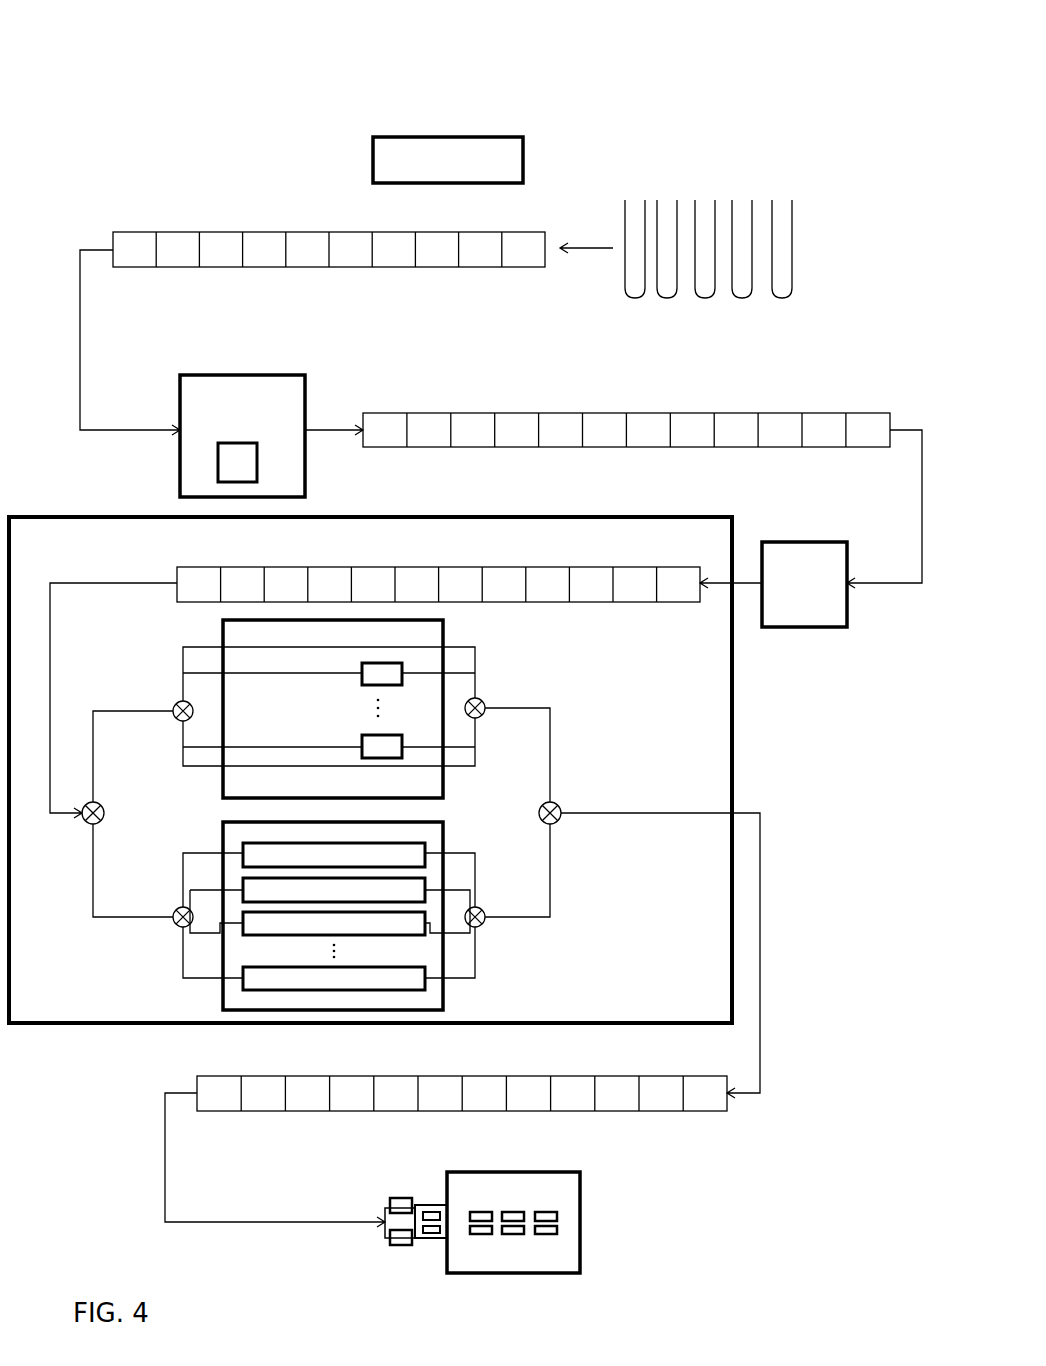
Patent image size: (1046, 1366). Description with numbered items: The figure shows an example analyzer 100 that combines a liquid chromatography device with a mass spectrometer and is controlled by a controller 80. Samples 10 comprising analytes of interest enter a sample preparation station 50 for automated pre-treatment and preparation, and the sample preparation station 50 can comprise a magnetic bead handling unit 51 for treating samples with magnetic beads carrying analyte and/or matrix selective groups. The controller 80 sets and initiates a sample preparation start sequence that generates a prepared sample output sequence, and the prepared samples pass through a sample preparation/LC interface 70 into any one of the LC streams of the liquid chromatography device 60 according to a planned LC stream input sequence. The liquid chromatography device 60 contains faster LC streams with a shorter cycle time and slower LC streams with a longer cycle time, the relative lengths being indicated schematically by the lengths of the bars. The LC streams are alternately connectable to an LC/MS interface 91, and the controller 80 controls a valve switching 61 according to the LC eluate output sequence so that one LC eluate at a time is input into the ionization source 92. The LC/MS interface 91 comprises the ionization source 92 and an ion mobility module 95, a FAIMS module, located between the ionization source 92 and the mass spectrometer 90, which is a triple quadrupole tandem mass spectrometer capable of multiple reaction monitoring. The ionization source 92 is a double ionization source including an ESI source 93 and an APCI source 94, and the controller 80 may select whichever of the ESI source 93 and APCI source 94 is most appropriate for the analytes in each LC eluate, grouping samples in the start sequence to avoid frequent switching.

The analyzer 100 is at (318, 92).
The controller 80 is at (435, 137).
The samples 10 is at (724, 192).
The sample preparation station 50 is at (218, 375).
The magnetic bead handling unit 51 is at (248, 443).
The sample preparation/LC interface 70 is at (820, 542).
The liquid chromatography device 60 is at (733, 744).
The valve switching 61 is at (554, 804).
The mass spectrometer 90 is at (580, 1237).
The LC/MS interface 91 is at (415, 1197).
The ionization source 92 is at (386, 1216).
The ESI source 93 is at (393, 1197).
The APCI source 94 is at (392, 1247).
The ion mobility module 95 is at (432, 1240).